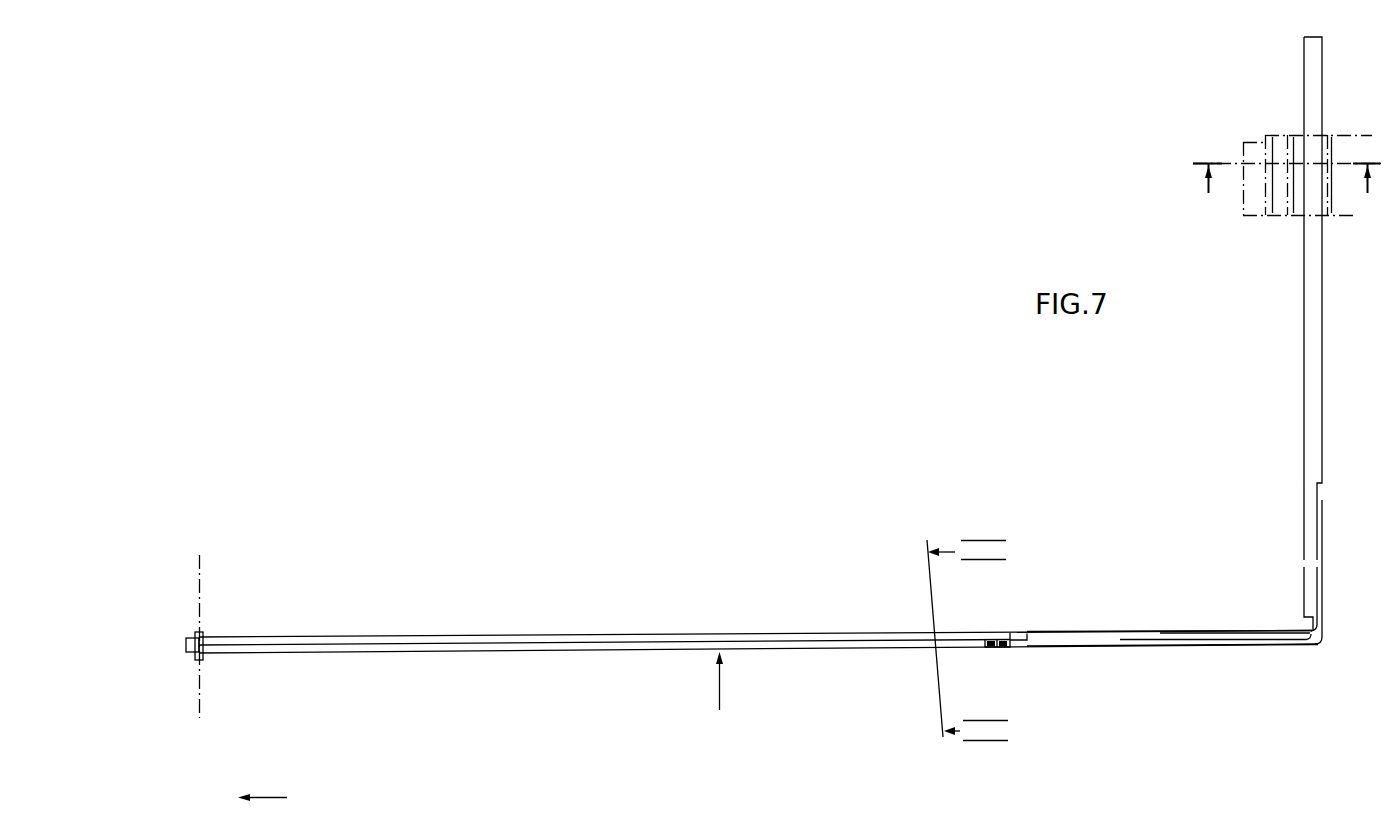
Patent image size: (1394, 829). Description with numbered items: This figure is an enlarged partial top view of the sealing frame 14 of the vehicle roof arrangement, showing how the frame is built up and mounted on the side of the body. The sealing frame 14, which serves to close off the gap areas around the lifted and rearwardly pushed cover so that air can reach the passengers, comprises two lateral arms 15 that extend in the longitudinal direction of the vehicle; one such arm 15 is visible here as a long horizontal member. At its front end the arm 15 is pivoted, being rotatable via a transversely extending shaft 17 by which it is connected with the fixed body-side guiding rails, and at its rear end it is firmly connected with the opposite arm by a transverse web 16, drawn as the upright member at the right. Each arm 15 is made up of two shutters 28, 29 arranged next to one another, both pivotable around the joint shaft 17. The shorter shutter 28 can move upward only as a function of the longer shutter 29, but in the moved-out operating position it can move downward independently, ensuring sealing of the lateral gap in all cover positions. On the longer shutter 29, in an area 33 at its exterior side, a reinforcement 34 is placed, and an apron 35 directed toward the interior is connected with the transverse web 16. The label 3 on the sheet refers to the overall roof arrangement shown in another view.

The sliding door assembly 3 is at (777, 419).
The sealing frame 14 is at (495, 661).
The lateral arm 15 is at (1052, 648).
The transverse web 16 is at (1316, 284).
The shaft 17 is at (196, 660).
The shorter shutter 28 is at (818, 634).
The longer shutter 29 is at (879, 648).
The area 33 is at (1179, 626).
The reinforcement 34 is at (1205, 649).
The apron 35 is at (1326, 528).